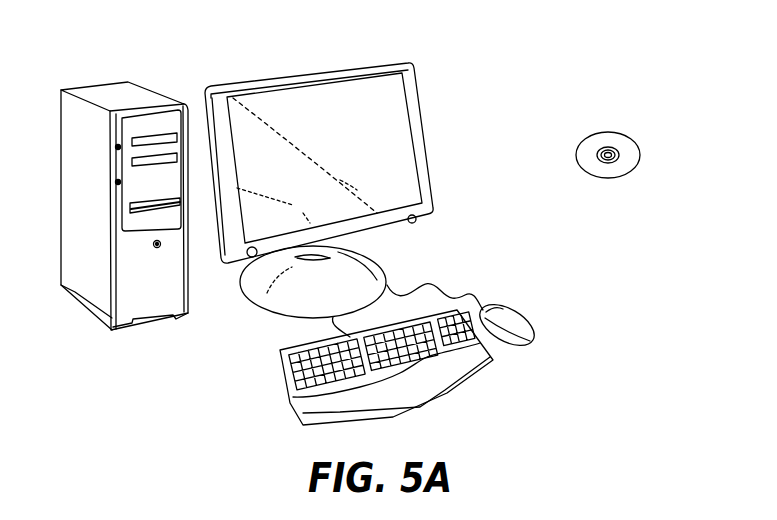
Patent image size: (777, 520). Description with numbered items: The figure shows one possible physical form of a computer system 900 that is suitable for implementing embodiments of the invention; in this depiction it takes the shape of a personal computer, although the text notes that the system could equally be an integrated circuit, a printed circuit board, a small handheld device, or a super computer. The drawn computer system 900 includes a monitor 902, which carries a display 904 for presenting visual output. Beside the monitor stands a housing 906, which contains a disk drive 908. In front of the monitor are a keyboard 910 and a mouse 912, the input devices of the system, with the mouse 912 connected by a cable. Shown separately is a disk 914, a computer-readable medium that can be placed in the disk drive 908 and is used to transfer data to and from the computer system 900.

The computer system 900 is at (537, 48).
The monitor 902 is at (427, 162).
The display 904 is at (383, 105).
The housing 906 is at (112, 90).
The disk drive 908 is at (178, 207).
The keyboard 910 is at (292, 395).
The mouse 912 is at (527, 318).
The disk 914 is at (626, 132).